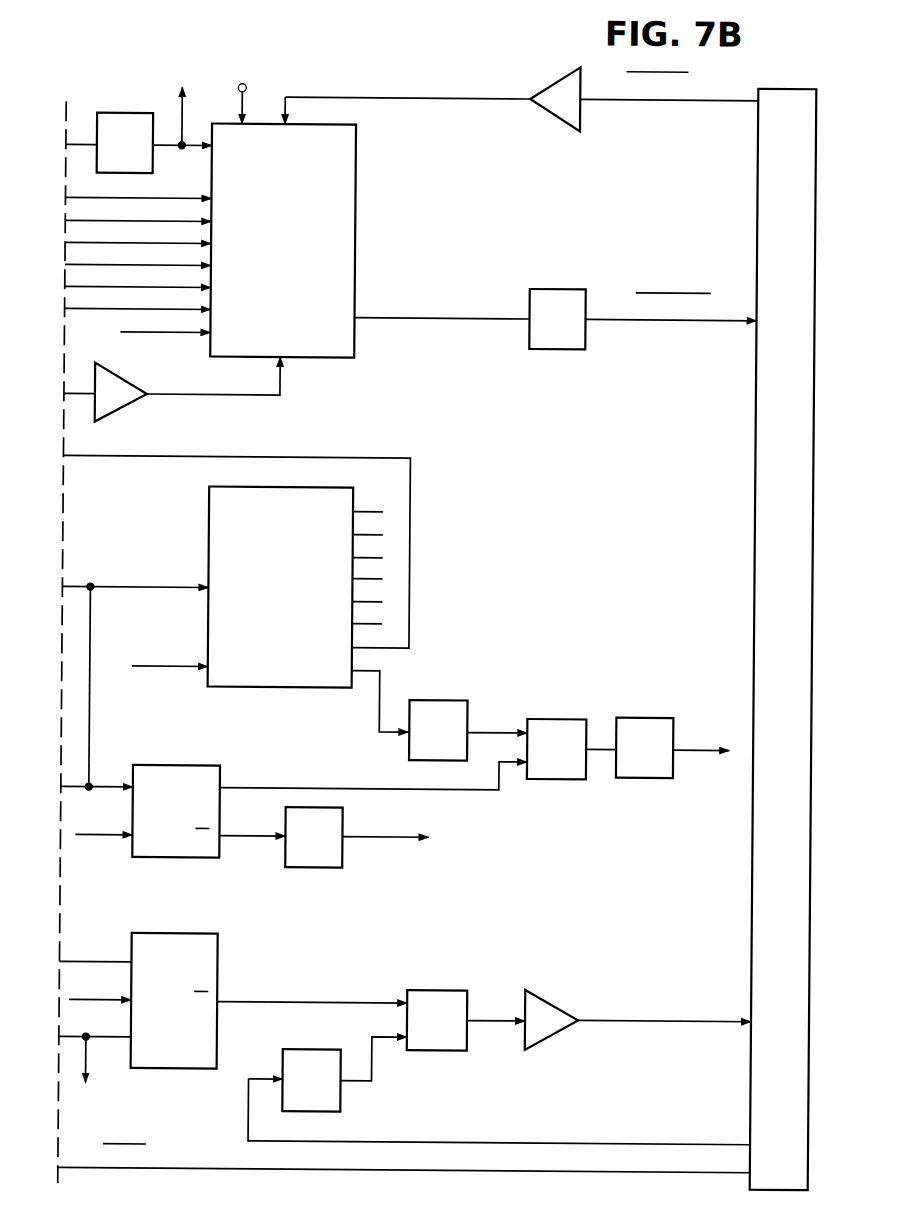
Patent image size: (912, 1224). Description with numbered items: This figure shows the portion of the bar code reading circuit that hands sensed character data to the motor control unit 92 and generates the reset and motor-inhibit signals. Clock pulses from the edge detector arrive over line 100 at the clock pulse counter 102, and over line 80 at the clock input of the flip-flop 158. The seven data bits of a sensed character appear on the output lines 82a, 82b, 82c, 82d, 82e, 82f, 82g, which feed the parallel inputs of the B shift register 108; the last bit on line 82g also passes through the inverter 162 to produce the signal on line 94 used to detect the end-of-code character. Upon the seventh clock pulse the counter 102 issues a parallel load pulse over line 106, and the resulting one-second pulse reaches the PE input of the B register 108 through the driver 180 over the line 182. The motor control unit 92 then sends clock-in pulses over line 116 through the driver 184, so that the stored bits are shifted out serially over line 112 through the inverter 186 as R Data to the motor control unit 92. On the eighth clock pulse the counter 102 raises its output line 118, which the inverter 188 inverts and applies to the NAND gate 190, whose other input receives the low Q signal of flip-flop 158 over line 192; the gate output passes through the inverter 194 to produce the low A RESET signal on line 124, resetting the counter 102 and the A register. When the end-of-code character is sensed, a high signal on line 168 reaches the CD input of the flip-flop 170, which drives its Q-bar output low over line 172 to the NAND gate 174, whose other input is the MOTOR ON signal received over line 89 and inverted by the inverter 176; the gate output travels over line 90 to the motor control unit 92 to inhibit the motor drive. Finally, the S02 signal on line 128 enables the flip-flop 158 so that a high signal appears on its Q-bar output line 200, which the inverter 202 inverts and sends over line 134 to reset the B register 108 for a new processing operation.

The line 80 is at (92, 703).
The output line 82a is at (86, 311).
The output line 82b is at (86, 289).
The output line 82c is at (86, 267).
The output line 82d is at (86, 245).
The output line 82e is at (86, 223).
The output line 82f is at (86, 200).
The output line 82g is at (71, 147).
The line 89 is at (460, 1142).
The line 90 is at (660, 1025).
The motor control unit 92 is at (789, 95).
The line 94 is at (179, 110).
The line 100 is at (157, 586).
The clock pulse counter 102 is at (207, 509).
The line 106 is at (288, 458).
The B shift register 108 is at (352, 223).
The line 112 is at (677, 321).
The line 116 is at (726, 103).
The output line 118 is at (378, 715).
The line 124 is at (170, 666).
The line 128 is at (88, 839).
The line 134 is at (241, 100).
The flip-flop 158 is at (177, 772).
The inverter 162 is at (141, 117).
The line 168 is at (80, 964).
The flip-flop 170 is at (178, 938).
The line 172 is at (330, 1003).
The NAND gate 174 is at (430, 992).
The inverter 176 is at (300, 1052).
The driver 180 is at (103, 410).
The parallel enable line 182 is at (278, 396).
The driver 184 is at (553, 89).
The inverter 186 is at (560, 290).
The inverter 188 is at (440, 708).
The NAND gate 190 is at (555, 722).
The line 192 is at (355, 789).
The inverter 194 is at (643, 722).
The Q-bar output line 200 is at (256, 840).
The inverter 202 is at (332, 869).